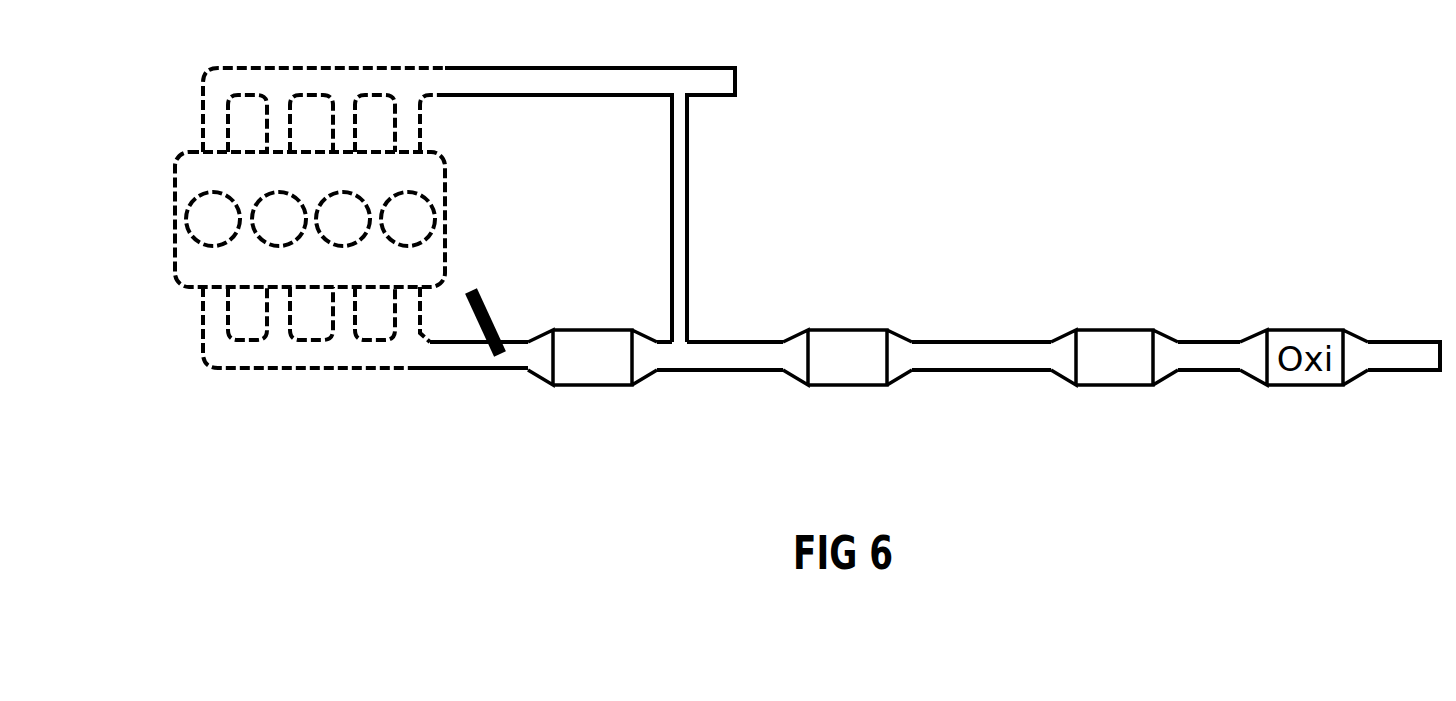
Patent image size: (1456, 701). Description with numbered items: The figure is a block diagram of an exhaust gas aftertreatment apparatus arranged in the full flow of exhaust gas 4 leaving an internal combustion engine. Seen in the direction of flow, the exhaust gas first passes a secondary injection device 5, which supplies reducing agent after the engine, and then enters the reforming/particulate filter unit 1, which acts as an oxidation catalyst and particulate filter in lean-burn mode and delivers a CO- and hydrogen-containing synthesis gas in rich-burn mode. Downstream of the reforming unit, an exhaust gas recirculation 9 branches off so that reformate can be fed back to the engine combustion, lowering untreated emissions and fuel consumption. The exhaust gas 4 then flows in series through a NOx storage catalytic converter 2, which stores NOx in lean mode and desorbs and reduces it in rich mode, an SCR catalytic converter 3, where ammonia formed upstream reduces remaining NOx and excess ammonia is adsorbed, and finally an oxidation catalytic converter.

The reforming/particulate filter unit 1 is at (592, 357).
The NOx storage catalytic converter 2 is at (847, 357).
The SCR catalytic converter 3 is at (1114, 357).
The exhaust gas full flow 4 is at (953, 353).
The secondary injection device 5 is at (488, 312).
The exhaust gas recirculation 9 is at (680, 190).